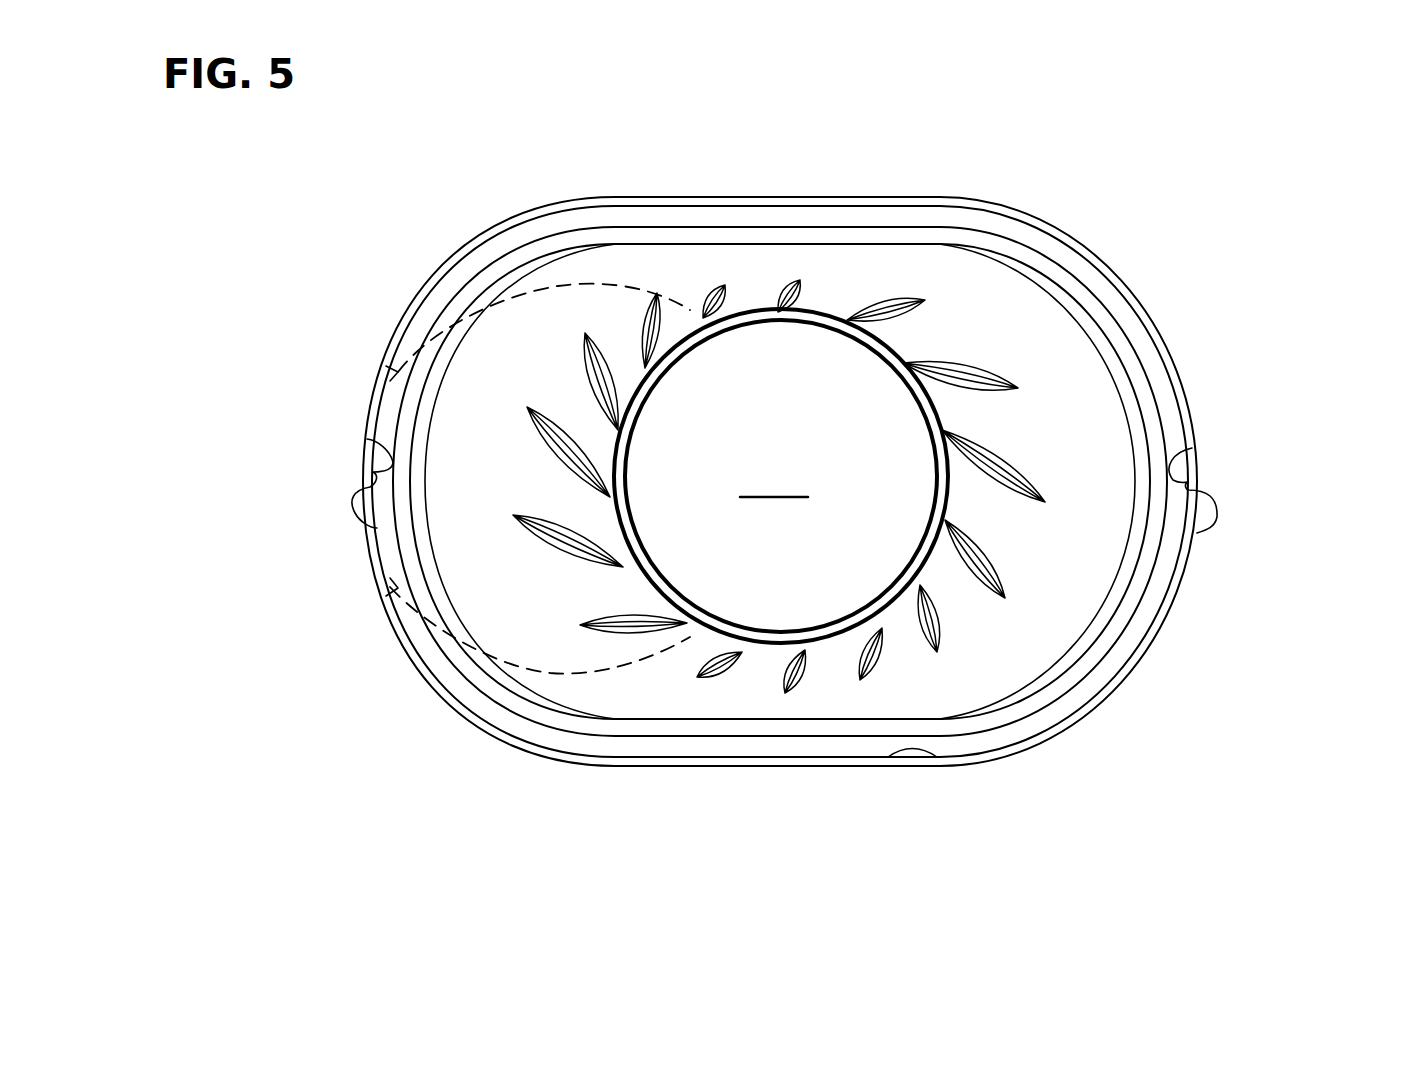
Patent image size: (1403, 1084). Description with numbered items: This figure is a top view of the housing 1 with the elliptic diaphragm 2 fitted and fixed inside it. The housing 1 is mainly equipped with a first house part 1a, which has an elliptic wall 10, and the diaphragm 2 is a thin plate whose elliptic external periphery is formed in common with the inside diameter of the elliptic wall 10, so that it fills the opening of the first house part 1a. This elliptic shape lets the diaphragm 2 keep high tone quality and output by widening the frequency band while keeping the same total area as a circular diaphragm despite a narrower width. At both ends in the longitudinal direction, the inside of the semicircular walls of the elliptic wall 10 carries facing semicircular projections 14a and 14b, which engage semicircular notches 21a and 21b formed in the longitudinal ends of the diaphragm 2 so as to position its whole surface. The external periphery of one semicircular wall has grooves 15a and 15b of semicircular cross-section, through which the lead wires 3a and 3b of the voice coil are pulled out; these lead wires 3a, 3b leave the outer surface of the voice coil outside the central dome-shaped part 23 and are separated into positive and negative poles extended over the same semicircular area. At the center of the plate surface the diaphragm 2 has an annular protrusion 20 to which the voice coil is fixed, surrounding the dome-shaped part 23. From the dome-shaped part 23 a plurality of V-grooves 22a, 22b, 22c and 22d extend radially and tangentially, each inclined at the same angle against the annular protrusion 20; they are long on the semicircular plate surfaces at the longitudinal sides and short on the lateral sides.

The housing 1 is at (603, 778).
The first house part 1a is at (1060, 738).
The diaphragm 2 is at (728, 703).
The lead wire 3a is at (558, 286).
The lead wire 3b is at (550, 673).
The elliptic wall 10 is at (888, 757).
The semicircular projection 14a is at (367, 439).
The semicircular projection 14b is at (1192, 448).
The groove 15a is at (392, 372).
The groove 15b is at (385, 590).
The annular protrusion 20 is at (845, 365).
The semicircular notch 21a is at (377, 528).
The semicircular notch 21b is at (1197, 533).
The V-groove 22a is at (541, 425).
The V-groove 22b is at (1035, 468).
The V-groove 22c is at (708, 316).
The V-groove 22d is at (862, 677).
The dome-shaped part 23 is at (774, 469).